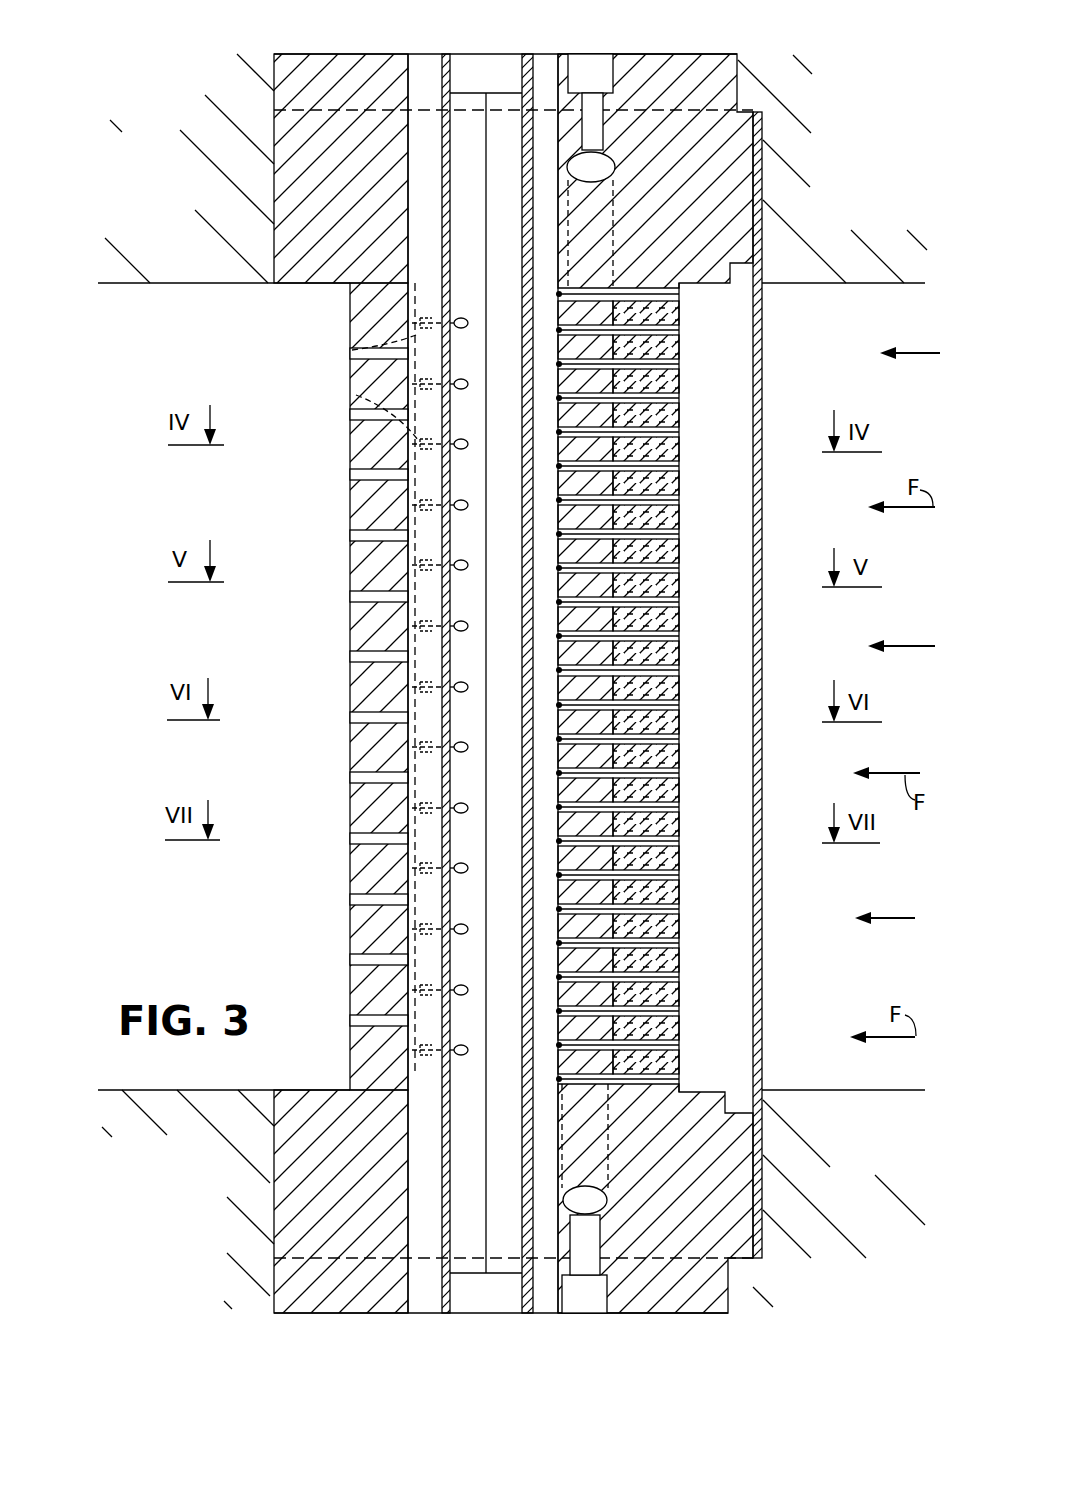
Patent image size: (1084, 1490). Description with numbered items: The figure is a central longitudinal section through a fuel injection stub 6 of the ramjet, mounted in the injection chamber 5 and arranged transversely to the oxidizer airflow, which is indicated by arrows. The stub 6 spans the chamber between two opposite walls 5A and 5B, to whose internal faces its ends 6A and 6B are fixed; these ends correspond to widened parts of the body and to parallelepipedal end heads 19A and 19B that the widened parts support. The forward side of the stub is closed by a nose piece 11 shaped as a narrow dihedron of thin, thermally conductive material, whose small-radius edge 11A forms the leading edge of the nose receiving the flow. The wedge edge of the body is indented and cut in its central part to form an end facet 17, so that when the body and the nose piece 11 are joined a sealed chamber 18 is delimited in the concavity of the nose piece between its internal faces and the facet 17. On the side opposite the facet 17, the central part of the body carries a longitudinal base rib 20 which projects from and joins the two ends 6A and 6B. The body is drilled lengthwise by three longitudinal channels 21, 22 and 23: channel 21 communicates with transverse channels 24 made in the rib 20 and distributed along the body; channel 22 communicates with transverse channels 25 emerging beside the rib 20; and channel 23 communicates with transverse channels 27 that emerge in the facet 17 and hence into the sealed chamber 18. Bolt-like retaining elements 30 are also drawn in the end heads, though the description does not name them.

The injection chamber 5 is at (146, 650).
The wall of the injection chamber 5A is at (150, 245).
The wall of the injection chamber 5B is at (190, 1122).
The fuel injection stub 6 is at (832, 185).
The end of the stub 6A is at (283, 155).
The end of the stub 6B is at (300, 1237).
The nose piece 11 is at (798, 685).
The edge of the nose piece 11A is at (776, 668).
The end facet 17 is at (651, 686).
The sealed chamber 18 is at (733, 1018).
The end head 19A is at (710, 68).
The end head 19B is at (700, 1284).
The longitudinal base rib 20 is at (350, 503).
The longitudinal channel 21 is at (425, 65).
The longitudinal channel 22 is at (476, 68).
The longitudinal channel 23 is at (545, 68).
The transverse channels 24 is at (355, 775).
The transverse channels 25 is at (356, 395).
The transverse channels 27 is at (680, 800).
The bolts 30 is at (600, 68).